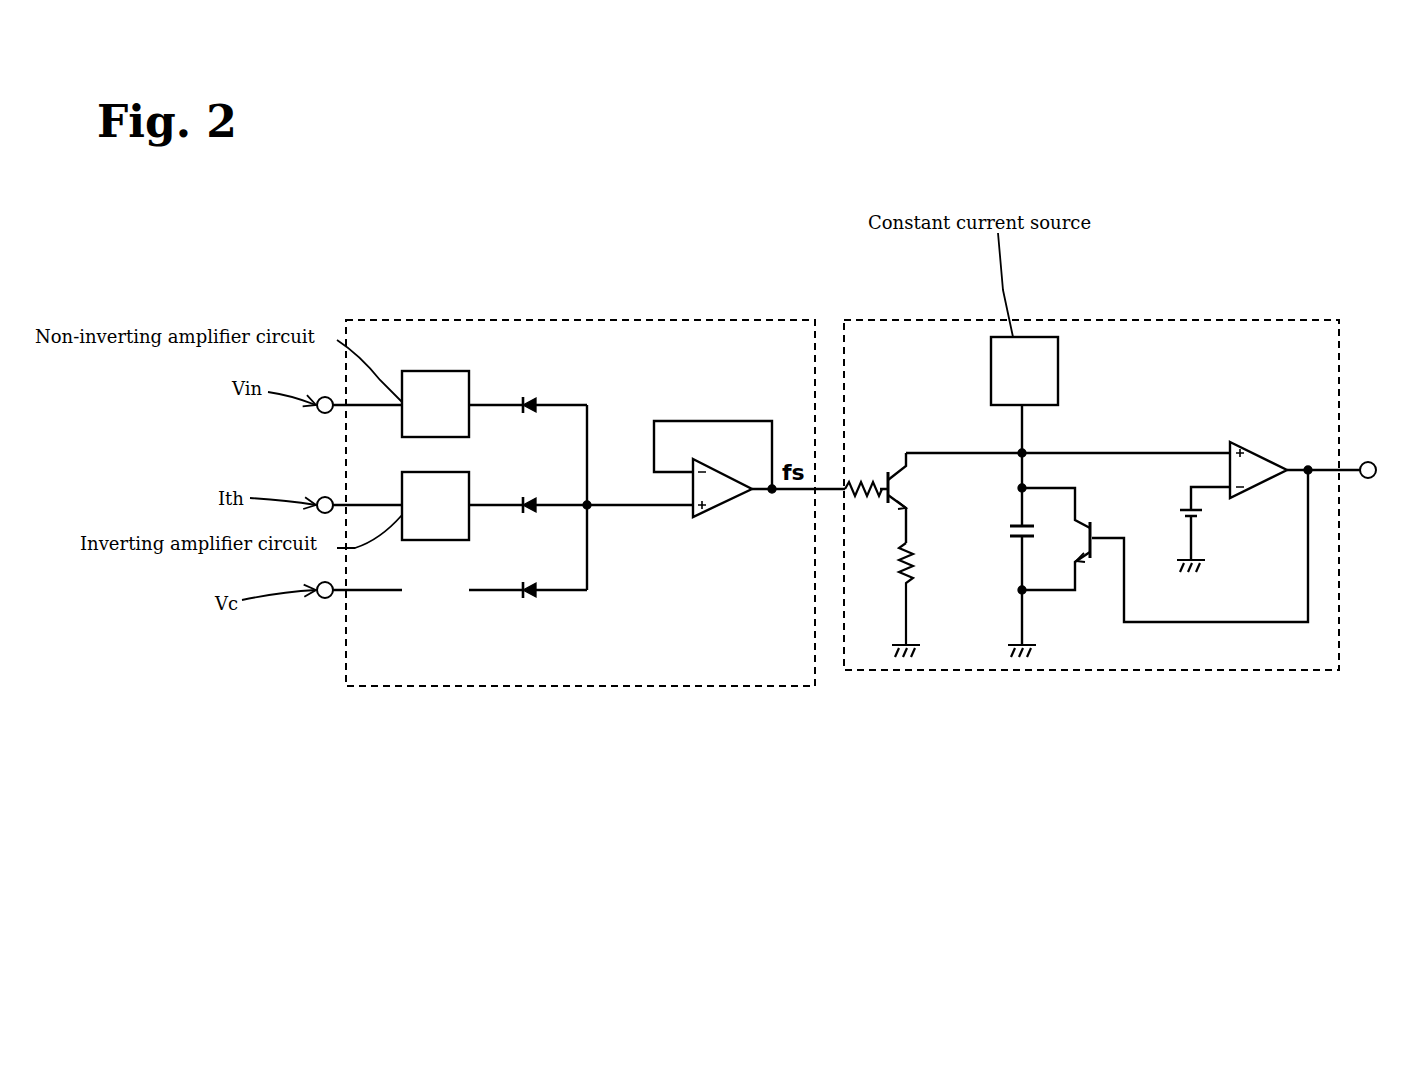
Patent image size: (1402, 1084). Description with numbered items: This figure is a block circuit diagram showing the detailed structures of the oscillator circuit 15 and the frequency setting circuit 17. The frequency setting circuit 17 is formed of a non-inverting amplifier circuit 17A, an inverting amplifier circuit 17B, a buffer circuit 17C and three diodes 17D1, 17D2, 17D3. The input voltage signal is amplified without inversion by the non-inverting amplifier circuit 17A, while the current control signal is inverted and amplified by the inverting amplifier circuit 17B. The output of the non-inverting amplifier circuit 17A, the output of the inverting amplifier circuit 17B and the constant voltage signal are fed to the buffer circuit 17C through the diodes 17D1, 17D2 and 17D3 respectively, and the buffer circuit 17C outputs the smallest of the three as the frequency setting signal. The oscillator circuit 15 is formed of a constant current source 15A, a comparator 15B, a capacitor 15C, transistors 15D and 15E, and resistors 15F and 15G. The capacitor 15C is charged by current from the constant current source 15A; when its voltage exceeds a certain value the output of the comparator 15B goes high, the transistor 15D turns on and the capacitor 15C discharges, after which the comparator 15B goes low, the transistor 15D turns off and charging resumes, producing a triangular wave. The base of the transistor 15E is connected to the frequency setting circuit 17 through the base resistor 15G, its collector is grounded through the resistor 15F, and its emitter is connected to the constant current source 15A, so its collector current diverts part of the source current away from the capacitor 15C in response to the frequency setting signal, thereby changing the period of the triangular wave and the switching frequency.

The frequency setting circuit 17 is at (567, 318).
The non-inverting amplifier circuit 17A is at (428, 372).
The inverting amplifier circuit 17B is at (430, 542).
The buffer circuit 17C is at (720, 462).
The diode 17D1 is at (610, 375).
The diode 17D2 is at (540, 515).
The diode 17D3 is at (536, 598).
The oscillator circuit 15 is at (1073, 320).
The constant current source 15A is at (1062, 378).
The comparator 15B is at (1238, 448).
The capacitor 15C is at (1020, 540).
The transistor 15D is at (1085, 568).
The transistor 15E is at (884, 452).
The resistor 15F is at (895, 585).
The base resistor 15G is at (870, 503).